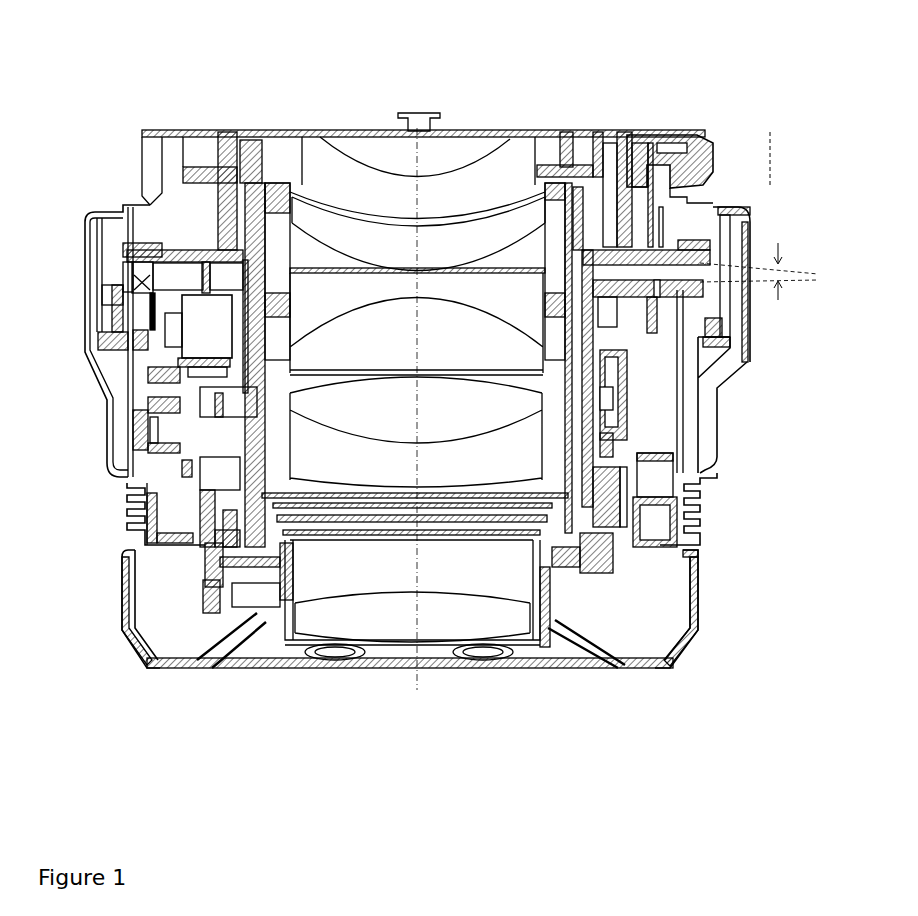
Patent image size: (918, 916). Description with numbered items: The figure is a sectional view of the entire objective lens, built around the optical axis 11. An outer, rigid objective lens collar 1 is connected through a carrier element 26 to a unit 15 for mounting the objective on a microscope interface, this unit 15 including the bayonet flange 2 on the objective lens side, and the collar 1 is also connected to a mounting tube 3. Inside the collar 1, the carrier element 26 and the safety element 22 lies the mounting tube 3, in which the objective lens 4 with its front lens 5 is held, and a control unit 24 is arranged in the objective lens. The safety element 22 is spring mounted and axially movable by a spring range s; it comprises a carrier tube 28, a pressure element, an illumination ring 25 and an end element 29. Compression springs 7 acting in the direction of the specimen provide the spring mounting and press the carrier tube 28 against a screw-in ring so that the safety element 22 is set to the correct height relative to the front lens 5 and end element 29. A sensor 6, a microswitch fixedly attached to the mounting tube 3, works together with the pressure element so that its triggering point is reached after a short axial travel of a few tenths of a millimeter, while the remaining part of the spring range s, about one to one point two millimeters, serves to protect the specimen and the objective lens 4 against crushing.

The objective lens collar 1 is at (738, 354).
The bayonet flange 2 is at (702, 137).
The mounting tube 3 is at (602, 210).
The objective lens 4 is at (535, 462).
The front lens 5 is at (345, 648).
The sensor (microswitch) 6 is at (193, 307).
The compression spring 7 is at (101, 208).
The optical axis 11 is at (410, 615).
The unit for mounting on an interface of the microscope 15 is at (813, 159).
The safety element 22 is at (700, 570).
The control unit in the objective lens 24 is at (617, 370).
The illumination ring 25 is at (640, 627).
The carrier element 26 is at (687, 217).
The carrier tube 28 is at (133, 523).
The end element 29 is at (138, 647).
The spring range s is at (769, 271).